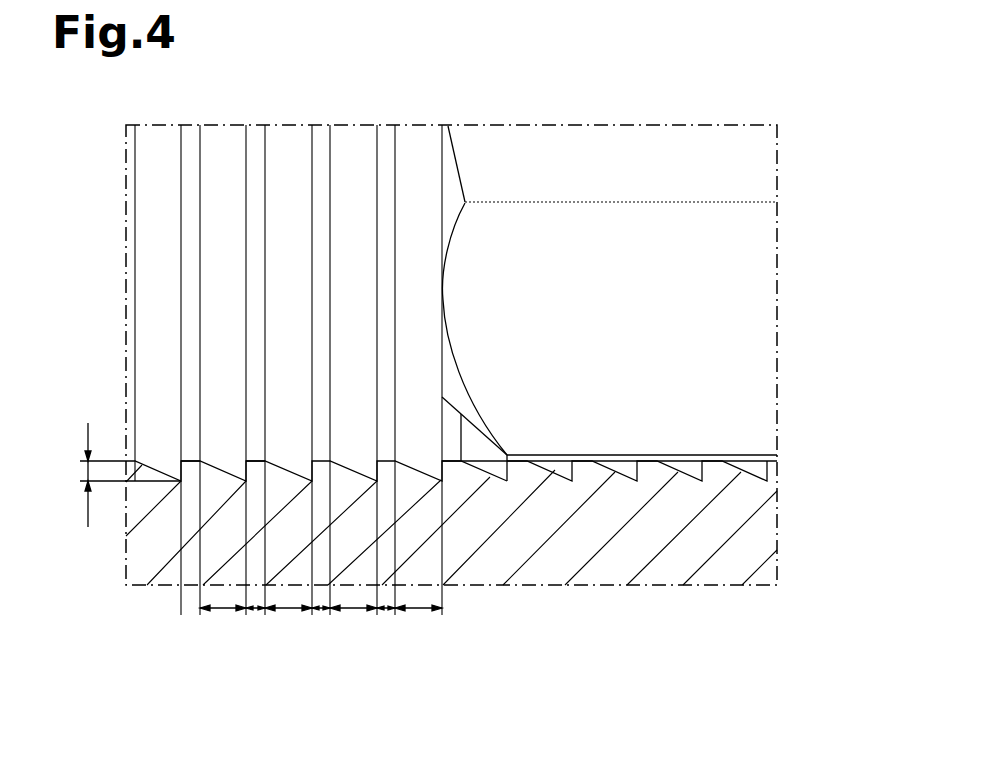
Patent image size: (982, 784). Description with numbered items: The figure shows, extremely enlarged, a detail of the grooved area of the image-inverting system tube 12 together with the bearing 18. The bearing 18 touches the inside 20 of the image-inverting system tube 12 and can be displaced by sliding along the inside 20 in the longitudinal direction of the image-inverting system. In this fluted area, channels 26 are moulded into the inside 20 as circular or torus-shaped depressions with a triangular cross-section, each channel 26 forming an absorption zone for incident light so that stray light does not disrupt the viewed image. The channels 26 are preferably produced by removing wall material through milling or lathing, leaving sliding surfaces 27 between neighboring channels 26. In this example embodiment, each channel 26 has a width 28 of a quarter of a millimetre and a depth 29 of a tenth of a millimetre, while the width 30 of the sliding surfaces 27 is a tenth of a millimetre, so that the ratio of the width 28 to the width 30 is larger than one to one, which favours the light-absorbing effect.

The image-inverting system tube 12 is at (779, 534).
The bearing 18 is at (440, 128).
The inside 20 is at (642, 462).
The channels 26 is at (362, 458).
The sliding surfaces 27 is at (262, 461).
The width 28 is at (223, 613).
The depth 29 is at (85, 466).
The width 30 is at (255, 613).